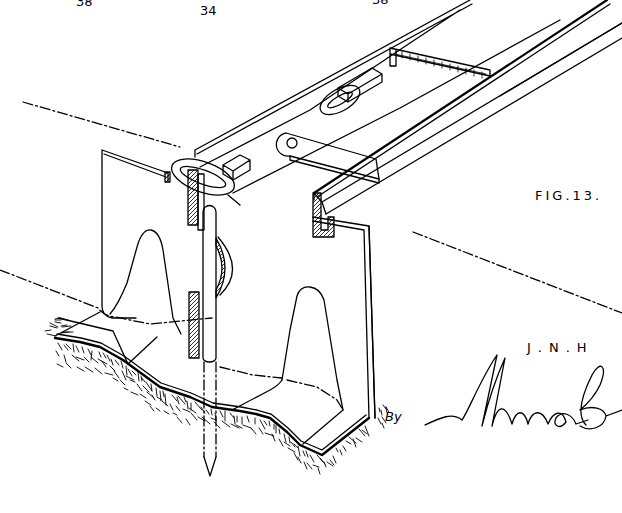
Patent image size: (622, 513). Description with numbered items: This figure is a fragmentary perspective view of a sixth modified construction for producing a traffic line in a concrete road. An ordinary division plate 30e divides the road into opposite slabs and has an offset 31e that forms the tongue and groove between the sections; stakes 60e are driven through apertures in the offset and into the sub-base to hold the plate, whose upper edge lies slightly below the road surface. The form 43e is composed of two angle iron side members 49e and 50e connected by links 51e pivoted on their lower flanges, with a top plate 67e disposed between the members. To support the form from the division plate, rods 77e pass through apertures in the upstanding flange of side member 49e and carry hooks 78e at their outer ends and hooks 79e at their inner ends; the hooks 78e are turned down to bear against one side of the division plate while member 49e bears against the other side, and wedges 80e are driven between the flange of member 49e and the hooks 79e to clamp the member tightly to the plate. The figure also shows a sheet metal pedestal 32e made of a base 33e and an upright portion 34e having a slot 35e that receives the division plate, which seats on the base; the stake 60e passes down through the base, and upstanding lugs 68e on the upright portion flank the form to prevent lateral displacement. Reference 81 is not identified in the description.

The division plate 30e is at (135, 234).
The offset 31e is at (207, 258).
The sheet metal pedestal 32e is at (373, 297).
The base 33e is at (337, 425).
The upright portion 34e is at (346, 253).
The slot 35e is at (240, 262).
The form 43e is at (320, 70).
The angle iron side member 49e is at (298, 107).
The angle iron side member 50e is at (428, 153).
The links 51e is at (329, 156).
The stakes 60e is at (210, 317).
The top plate 67e is at (520, 33).
The upstanding lugs 68e is at (165, 170).
The rods 77e is at (182, 155).
The hooks 78e is at (180, 175).
The hooks 79e is at (357, 103).
The wedges 80e is at (366, 82).
The rib 81 is at (327, 340).